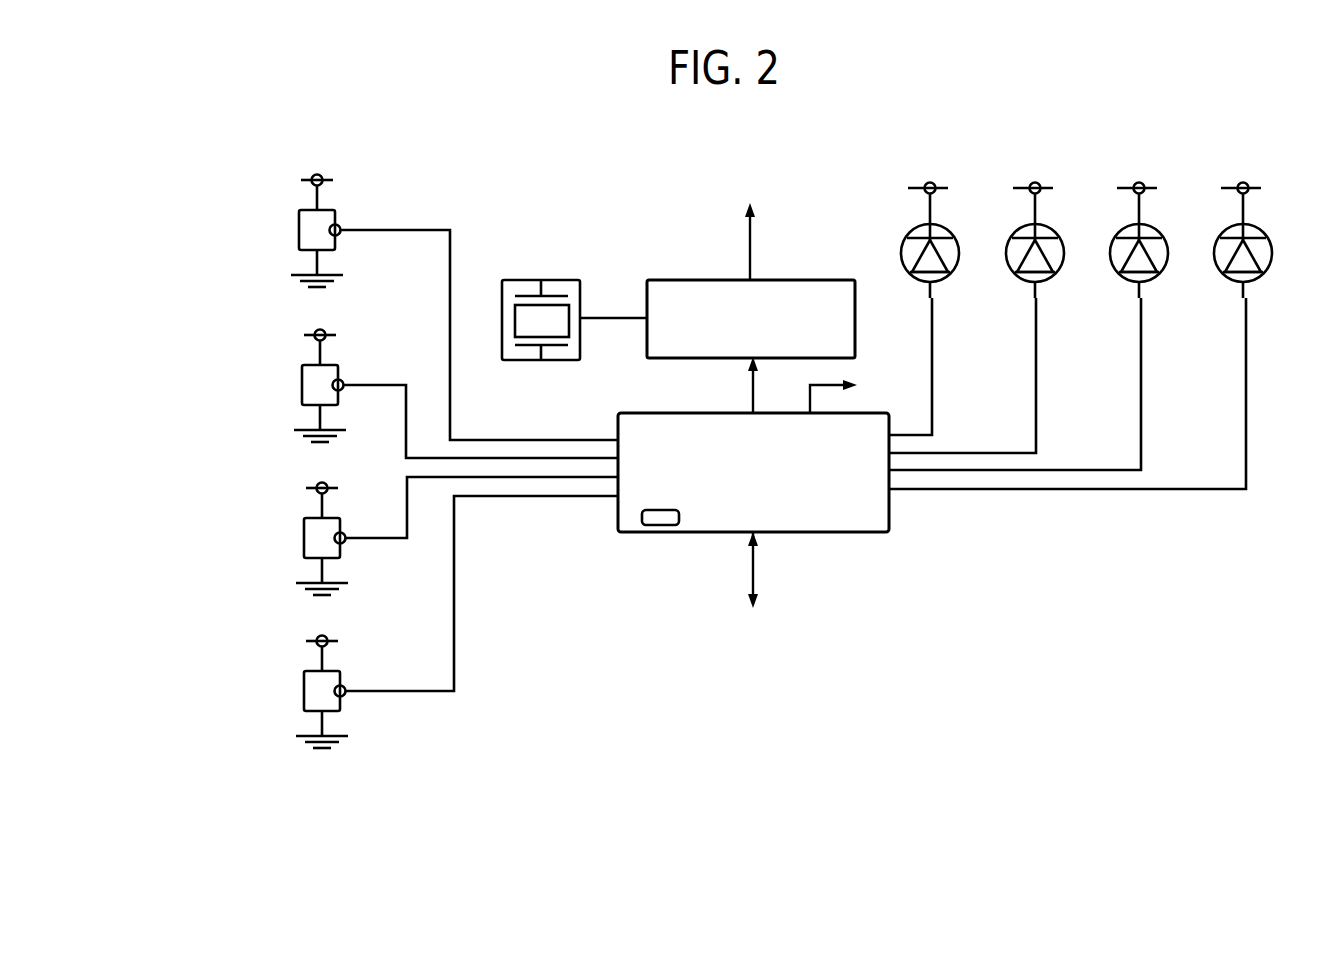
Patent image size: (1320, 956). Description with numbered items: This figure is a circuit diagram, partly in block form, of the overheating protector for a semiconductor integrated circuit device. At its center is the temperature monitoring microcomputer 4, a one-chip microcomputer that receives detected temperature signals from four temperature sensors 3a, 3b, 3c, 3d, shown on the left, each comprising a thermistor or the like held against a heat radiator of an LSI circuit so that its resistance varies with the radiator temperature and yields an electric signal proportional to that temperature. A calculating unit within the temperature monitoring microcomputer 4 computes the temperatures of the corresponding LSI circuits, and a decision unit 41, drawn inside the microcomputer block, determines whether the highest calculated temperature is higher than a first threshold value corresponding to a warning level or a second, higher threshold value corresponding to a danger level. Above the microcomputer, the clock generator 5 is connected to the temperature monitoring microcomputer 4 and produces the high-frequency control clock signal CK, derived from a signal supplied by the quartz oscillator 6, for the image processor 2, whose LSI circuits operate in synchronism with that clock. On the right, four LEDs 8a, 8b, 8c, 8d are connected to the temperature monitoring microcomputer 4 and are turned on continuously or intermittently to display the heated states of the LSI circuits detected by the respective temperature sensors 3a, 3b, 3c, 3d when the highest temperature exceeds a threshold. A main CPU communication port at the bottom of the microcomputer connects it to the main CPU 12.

The image processor 2 is at (741, 239).
The temperature sensor 3a is at (299, 228).
The temperature sensor 3b is at (302, 382).
The temperature sensor 3c is at (304, 535).
The temperature sensor 3d is at (304, 688).
The temperature monitoring microcomputer 4 is at (618, 414).
The clock generator 5 is at (647, 281).
The quartz oscillator 6 is at (541, 280).
The LED 8a is at (904, 240).
The LED 8b is at (1010, 240).
The LED 8c is at (1114, 240).
The LED 8d is at (1218, 240).
The main CPU 12 is at (852, 392).
The decision unit 41 is at (657, 525).